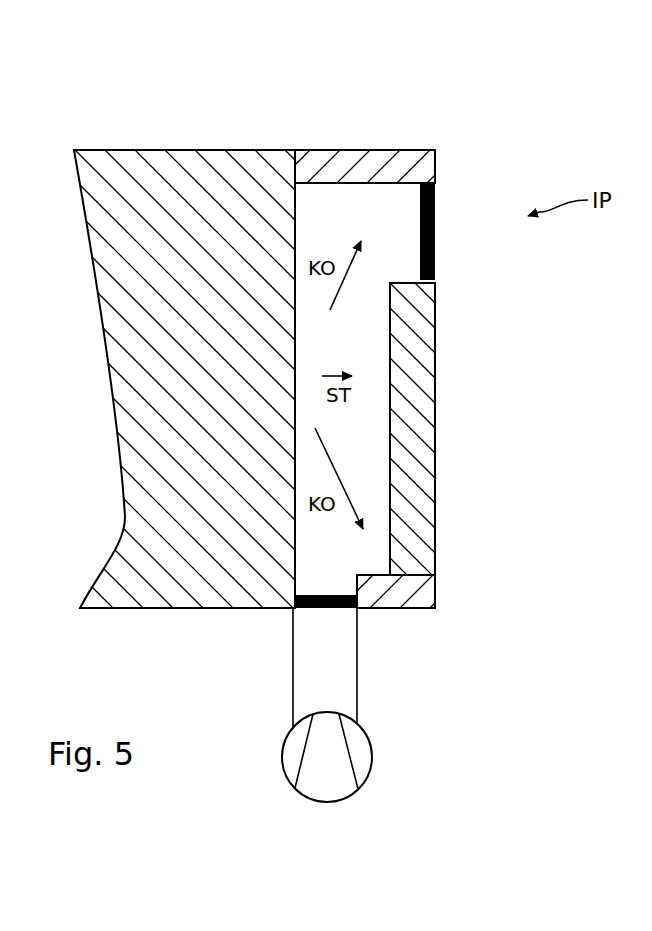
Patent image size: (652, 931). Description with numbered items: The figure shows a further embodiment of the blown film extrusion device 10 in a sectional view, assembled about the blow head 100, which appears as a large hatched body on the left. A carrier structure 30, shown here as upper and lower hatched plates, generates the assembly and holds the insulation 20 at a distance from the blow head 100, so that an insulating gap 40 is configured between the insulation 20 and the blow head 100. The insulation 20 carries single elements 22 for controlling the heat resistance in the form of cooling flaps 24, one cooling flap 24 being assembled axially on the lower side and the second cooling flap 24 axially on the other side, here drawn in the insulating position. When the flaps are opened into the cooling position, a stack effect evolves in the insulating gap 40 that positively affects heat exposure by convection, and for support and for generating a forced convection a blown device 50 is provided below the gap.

The blown film extrusion device 10 is at (397, 333).
The insulation 20 is at (397, 375).
The element for controlling the heat resistance 22 is at (435, 248).
The cooling flap 24 is at (435, 270).
The carrier structure 30 is at (307, 150).
The insulating gap 40 is at (335, 190).
The blown device 50 is at (280, 763).
The blow head 100 is at (128, 157).